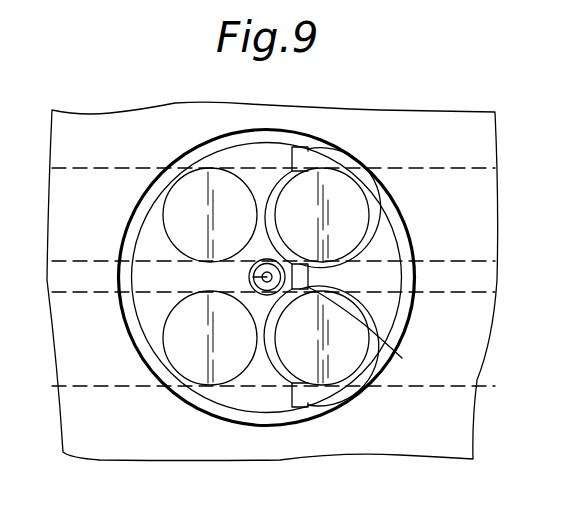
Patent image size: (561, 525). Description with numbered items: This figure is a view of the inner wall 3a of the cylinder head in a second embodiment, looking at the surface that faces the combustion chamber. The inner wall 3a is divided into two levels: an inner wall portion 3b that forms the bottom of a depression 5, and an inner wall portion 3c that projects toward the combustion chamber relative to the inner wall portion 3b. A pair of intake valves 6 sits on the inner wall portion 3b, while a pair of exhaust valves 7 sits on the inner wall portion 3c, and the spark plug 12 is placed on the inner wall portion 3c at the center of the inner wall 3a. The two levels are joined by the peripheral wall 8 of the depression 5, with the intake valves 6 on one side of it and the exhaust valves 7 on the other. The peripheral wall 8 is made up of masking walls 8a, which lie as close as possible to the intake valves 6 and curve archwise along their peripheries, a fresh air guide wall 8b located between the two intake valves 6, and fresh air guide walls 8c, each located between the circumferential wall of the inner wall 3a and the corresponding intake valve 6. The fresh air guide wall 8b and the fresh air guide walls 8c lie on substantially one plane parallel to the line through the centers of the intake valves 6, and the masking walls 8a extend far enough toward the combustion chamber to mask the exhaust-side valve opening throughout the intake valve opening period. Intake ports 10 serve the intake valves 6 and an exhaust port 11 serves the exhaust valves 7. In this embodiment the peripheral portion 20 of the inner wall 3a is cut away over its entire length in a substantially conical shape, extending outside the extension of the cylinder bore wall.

The inner wall of the cylinder head 3a is at (272, 164).
The inner wall portion 3b is at (365, 270).
The inner wall portion 3c is at (150, 275).
The depression 5 is at (330, 272).
The intake valves 6 is at (357, 212).
The exhaust valves 7 is at (178, 200).
The peripheral wall 8 is at (355, 283).
The masking walls 8a is at (273, 225).
The fresh air guide wall 8b is at (308, 271).
The fresh air guide walls 8c is at (298, 163).
The intake ports 10 is at (458, 180).
The exhaust port 11 is at (88, 172).
The spark plug 12 is at (266, 292).
The peripheral cut away portion 20 is at (193, 154).